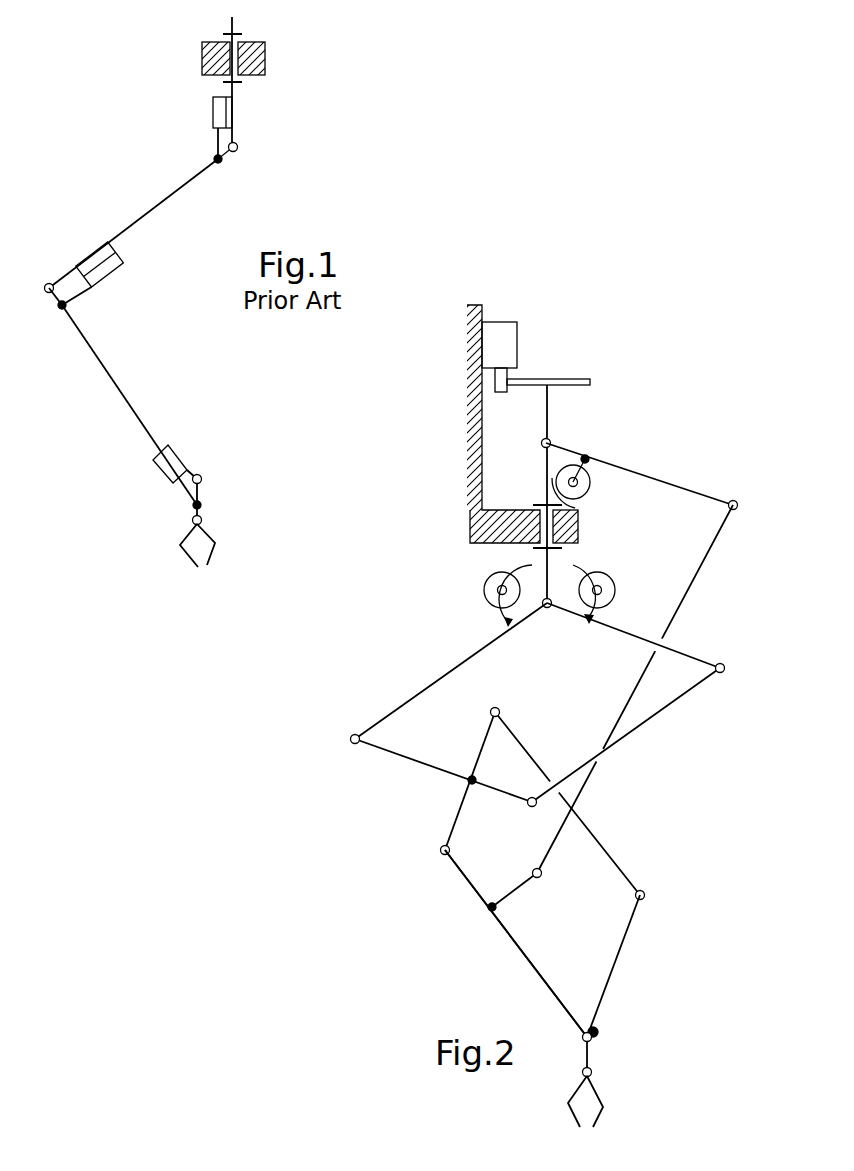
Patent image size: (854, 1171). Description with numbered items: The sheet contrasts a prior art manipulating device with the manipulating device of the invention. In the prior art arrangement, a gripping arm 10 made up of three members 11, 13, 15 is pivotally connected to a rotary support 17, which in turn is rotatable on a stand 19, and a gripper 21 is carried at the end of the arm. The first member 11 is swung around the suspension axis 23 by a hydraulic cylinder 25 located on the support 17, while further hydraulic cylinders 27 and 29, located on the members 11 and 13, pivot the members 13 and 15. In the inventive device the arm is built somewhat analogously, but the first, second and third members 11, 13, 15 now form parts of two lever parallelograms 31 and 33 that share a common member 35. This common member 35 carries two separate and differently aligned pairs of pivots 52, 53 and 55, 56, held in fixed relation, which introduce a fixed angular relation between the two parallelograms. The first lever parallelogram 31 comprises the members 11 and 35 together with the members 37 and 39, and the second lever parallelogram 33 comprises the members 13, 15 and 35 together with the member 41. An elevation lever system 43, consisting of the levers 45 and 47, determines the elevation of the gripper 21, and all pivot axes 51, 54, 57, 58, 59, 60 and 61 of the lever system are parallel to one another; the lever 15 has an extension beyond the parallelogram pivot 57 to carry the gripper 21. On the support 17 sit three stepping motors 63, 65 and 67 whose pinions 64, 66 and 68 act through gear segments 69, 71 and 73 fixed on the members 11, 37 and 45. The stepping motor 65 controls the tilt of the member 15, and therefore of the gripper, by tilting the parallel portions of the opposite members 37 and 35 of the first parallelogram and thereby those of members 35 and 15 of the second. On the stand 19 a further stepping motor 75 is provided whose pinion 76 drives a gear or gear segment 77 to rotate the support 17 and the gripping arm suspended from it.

In FIG. 1, the gripping arm 10 is at (104, 202).
In FIG. 1, the first member 11 is at (162, 200).
In FIG. 2, the first member 11 is at (437, 680).
In FIG. 1, the second member 13 is at (126, 387).
In FIG. 2, the second member 13 is at (538, 958).
In FIG. 1, the third member 15 is at (201, 505).
In FIG. 2, the third member 15 is at (630, 950).
In FIG. 1, the rotary support 17 is at (238, 87).
In FIG. 2, the rotary support 17 is at (545, 485).
In FIG. 1, the stand 19 is at (266, 60).
In FIG. 2, the stand 19 is at (483, 438).
In FIG. 1, the gripper 21 is at (214, 548).
In FIG. 2, the gripper 21 is at (604, 1106).
In FIG. 1, the suspension axis 23 is at (238, 150).
In FIG. 1, the hydraulic cylinder 25 is at (213, 114).
In FIG. 1, the hydraulic cylinder 27 is at (116, 281).
In FIG. 1, the hydraulic cylinder 29 is at (157, 478).
In FIG. 2, the first lever parallelogram 31 is at (374, 694).
In FIG. 2, the second lever parallelogram 33 is at (460, 909).
In FIG. 2, the common member 35 is at (462, 803).
In FIG. 2, the member 37 is at (620, 630).
In FIG. 2, the member 39 is at (655, 717).
In FIG. 2, the member 41 is at (620, 860).
In FIG. 2, the elevation lever system 43 is at (704, 468).
In FIG. 2, the lever 45 is at (645, 468).
In FIG. 2, the lever 47 is at (716, 566).
In FIG. 2, the pivot axis 51 is at (548, 608).
In FIG. 2, the pivot 52 is at (355, 744).
In FIG. 2, the pivot 53 is at (530, 807).
In FIG. 2, the pivot axis 54 is at (720, 673).
In FIG. 2, the pivot 55 is at (500, 710).
In FIG. 2, the pivot 56 is at (441, 852).
In FIG. 2, the parallelogram pivot 57 is at (600, 1035).
In FIG. 2, the pivot axis 58 is at (645, 895).
In FIG. 2, the pivot axis 59 is at (550, 440).
In FIG. 2, the pivot axis 60 is at (736, 500).
In FIG. 2, the pivot axis 61 is at (541, 874).
In FIG. 2, the stepping motor 63 is at (484, 591).
In FIG. 2, the pinion 64 is at (499, 589).
In FIG. 2, the stepping motor 65 is at (617, 592).
In FIG. 2, the pinion 66 is at (603, 585).
In FIG. 2, the stepping motor 67 is at (588, 457).
In FIG. 2, the pinion 68 is at (581, 501).
In FIG. 2, the gear segment 69 is at (504, 612).
In FIG. 2, the gear segment 71 is at (590, 576).
In FIG. 2, the gear segment 73 is at (591, 482).
In FIG. 2, the stepping motor 75 is at (498, 325).
In FIG. 2, the pinion 76 is at (495, 385).
In FIG. 2, the gear segment 77 is at (578, 379).